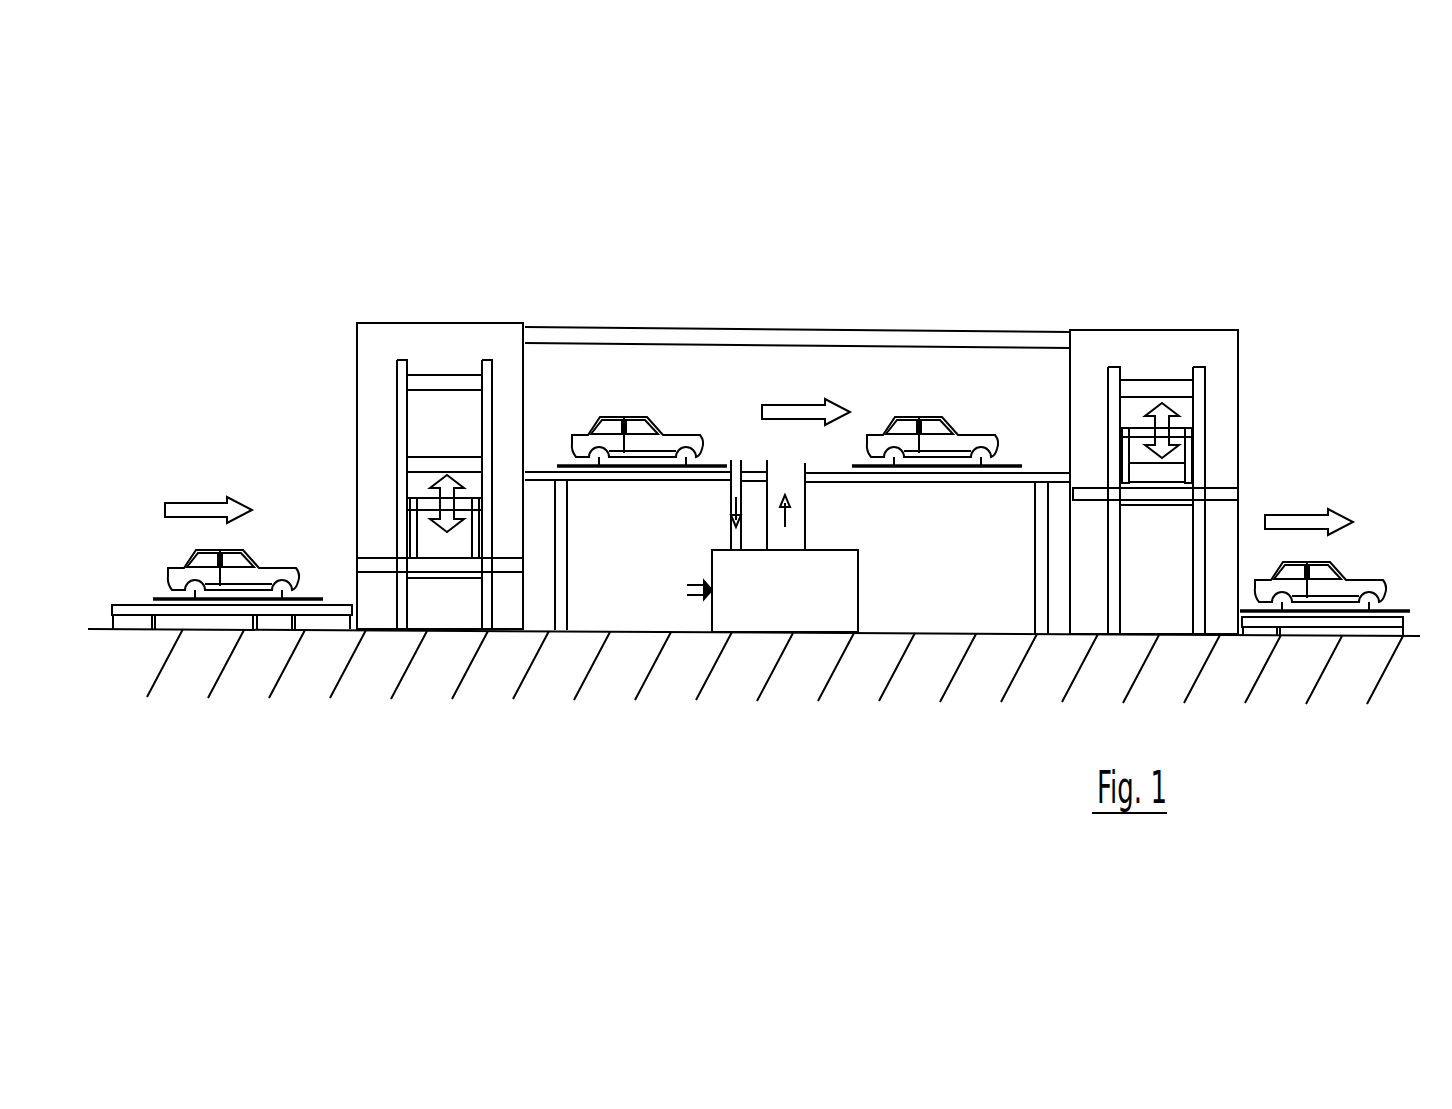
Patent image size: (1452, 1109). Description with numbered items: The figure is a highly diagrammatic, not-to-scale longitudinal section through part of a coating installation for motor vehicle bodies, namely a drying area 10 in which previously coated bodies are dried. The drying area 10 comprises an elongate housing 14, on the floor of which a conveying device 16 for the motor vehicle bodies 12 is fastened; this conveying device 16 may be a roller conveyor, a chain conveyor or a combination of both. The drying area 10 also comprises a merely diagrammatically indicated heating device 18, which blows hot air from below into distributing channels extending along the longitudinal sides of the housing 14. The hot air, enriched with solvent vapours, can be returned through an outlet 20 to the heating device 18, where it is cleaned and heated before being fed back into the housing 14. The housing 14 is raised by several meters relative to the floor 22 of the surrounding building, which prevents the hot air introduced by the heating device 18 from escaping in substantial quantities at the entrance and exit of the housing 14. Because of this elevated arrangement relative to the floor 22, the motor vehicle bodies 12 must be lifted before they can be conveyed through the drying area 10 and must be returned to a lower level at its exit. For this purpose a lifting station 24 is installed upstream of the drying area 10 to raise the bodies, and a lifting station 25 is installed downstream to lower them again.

The drying area 10 is at (935, 313).
The motor vehicle bodies 12 is at (265, 572).
The housing 14 is at (712, 360).
The conveying device 16 is at (1016, 473).
The heating device 18 is at (848, 583).
The outlet 20 is at (731, 545).
The floor 22 is at (588, 629).
The lifting station 24 is at (387, 430).
The lifting station 25 is at (1215, 414).